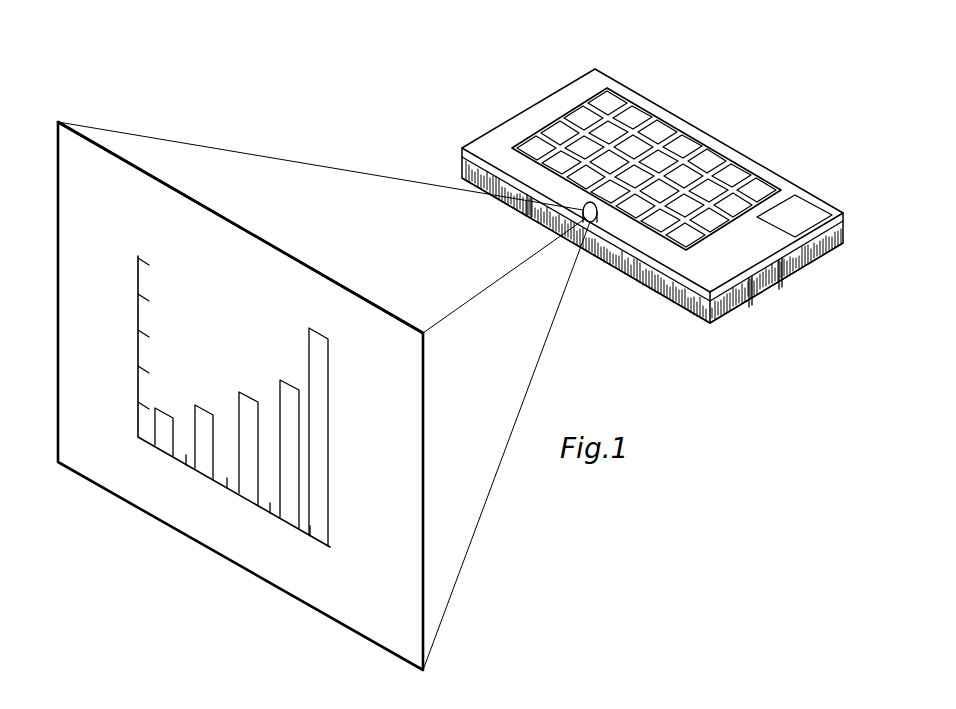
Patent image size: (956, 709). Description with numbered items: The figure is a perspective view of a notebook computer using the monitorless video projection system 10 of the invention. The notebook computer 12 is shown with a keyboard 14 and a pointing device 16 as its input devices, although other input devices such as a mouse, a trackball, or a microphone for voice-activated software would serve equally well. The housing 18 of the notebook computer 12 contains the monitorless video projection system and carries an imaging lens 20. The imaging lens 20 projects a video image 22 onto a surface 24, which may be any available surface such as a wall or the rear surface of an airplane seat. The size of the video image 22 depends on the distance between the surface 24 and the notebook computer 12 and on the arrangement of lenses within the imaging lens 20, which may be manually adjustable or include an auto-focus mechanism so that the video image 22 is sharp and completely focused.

The monitorless video projection system 10 is at (531, 25).
The notebook computer 12 is at (776, 291).
The keyboard 14 is at (623, 112).
The pointing device 16 is at (795, 213).
The housing 18 is at (688, 309).
The imaging lens 20 is at (592, 224).
The video image 22 is at (316, 592).
The surface 24 is at (60, 121).